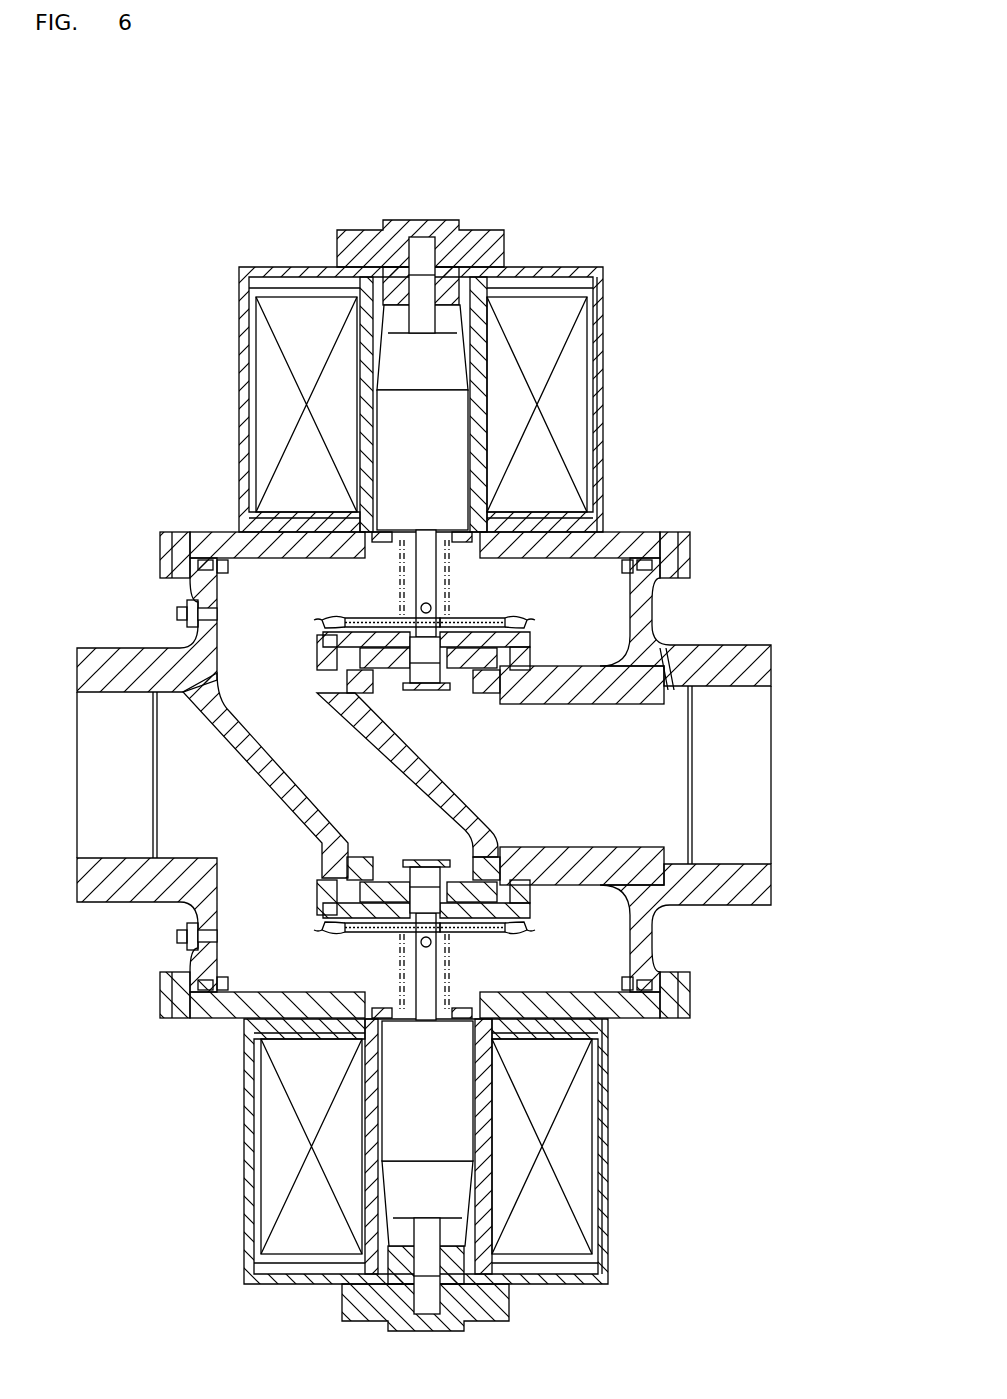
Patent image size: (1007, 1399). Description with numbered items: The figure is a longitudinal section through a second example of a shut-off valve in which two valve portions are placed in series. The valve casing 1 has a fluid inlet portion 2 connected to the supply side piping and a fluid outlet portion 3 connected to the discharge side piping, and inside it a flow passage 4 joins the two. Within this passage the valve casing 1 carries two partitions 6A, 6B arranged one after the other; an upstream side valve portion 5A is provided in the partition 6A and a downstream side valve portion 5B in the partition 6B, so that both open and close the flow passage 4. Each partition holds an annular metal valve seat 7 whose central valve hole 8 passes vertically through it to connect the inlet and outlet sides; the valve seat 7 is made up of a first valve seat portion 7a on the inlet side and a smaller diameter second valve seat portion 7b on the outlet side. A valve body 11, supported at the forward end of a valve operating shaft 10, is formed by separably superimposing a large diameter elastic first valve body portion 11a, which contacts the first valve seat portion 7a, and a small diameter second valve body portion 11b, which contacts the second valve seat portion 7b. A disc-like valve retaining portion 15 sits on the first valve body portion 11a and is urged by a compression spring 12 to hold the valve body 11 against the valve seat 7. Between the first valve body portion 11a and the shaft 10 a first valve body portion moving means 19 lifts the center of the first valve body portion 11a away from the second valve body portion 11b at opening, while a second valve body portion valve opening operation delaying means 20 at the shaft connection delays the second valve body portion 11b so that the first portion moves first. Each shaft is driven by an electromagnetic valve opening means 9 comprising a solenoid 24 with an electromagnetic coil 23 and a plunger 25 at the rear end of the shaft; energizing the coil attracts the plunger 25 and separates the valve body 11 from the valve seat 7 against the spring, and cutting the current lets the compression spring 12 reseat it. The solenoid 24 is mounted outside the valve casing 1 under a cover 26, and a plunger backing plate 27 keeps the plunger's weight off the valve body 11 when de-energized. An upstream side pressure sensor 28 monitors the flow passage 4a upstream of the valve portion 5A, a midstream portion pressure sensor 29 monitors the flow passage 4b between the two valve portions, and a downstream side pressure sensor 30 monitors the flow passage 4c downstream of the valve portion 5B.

The valve casing 1 is at (116, 646).
The fluid inlet portion 2 is at (95, 778).
The fluid outlet portion 3 is at (745, 768).
The flow passage 4 is at (216, 846).
The flow passage on the upstream side 4a is at (227, 863).
The flow passage between the valve portions 4b is at (257, 672).
The flow passage on the downstream side 4c is at (585, 812).
The upstream side valve portion 5A is at (340, 943).
The downstream side valve portion 5B is at (340, 608).
The partition 6A is at (278, 773).
The partition 6B is at (592, 690).
The valve seat 7 is at (305, 647).
The first valve seat portion 7a is at (533, 648).
The second valve seat portion 7b is at (490, 676).
The valve hole 8 is at (363, 700).
The electromagnetic valve opening means 9 is at (615, 348).
The valve operating shaft 10 is at (413, 560).
The valve body 11 is at (343, 617).
The first valve body portion 11a is at (518, 622).
The second valve body portion 11b is at (377, 694).
The compression spring 12 is at (395, 580).
The valve retaining portion 15 is at (468, 622).
The first valve body portion moving means 19 is at (425, 635).
The second valve body portion valve opening operation delaying means 20 is at (456, 692).
The electromagnetic coil 23 is at (568, 392).
The solenoid 24 is at (482, 445).
The plunger 25 is at (395, 412).
The cover 26 is at (603, 303).
The plunger backing plate 27 is at (460, 528).
The upstream side pressure sensor 28 is at (192, 945).
The midstream portion pressure sensor 29 is at (192, 605).
The downstream side pressure sensor 30 is at (668, 660).